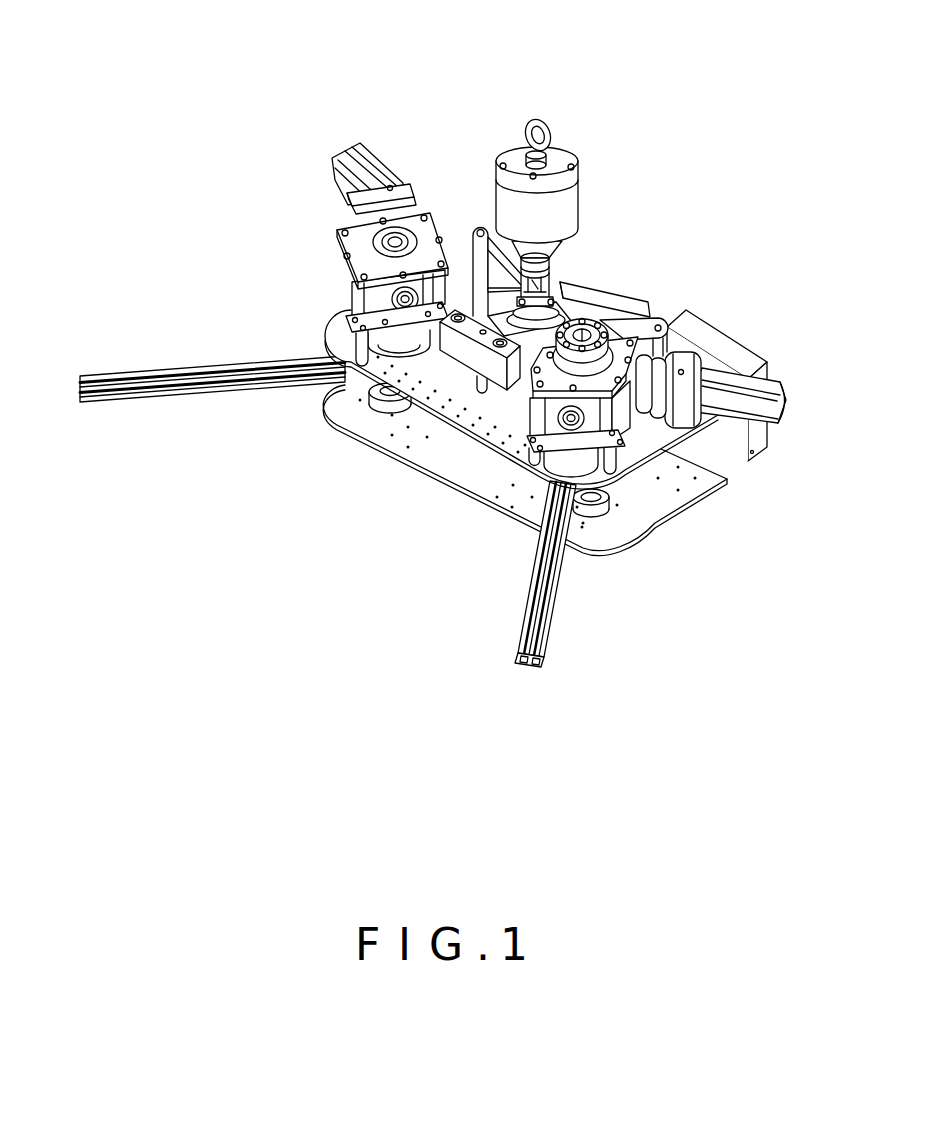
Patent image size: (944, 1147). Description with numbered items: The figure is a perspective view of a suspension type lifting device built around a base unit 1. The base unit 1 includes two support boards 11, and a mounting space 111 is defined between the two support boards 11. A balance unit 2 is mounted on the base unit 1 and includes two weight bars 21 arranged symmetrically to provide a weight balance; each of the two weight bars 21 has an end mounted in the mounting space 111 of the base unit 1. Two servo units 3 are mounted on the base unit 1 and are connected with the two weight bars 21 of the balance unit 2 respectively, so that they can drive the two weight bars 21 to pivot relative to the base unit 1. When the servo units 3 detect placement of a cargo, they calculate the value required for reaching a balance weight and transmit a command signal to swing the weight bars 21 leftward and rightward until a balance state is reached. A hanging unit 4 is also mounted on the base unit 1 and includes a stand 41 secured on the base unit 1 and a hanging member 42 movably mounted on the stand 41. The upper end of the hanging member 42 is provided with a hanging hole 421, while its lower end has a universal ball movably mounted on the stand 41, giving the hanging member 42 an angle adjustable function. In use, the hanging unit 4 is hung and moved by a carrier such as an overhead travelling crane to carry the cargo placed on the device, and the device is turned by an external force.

The base unit 1 is at (403, 476).
The support boards 11 is at (497, 455).
The mounting space 111 is at (487, 456).
The balance unit 2 is at (328, 488).
The weight bars 21 is at (185, 395).
The servo units 3 is at (316, 148).
The hanging unit 4 is at (588, 243).
The stand 41 is at (578, 305).
The hanging member 42 is at (511, 169).
The hanging hole 421 is at (522, 134).